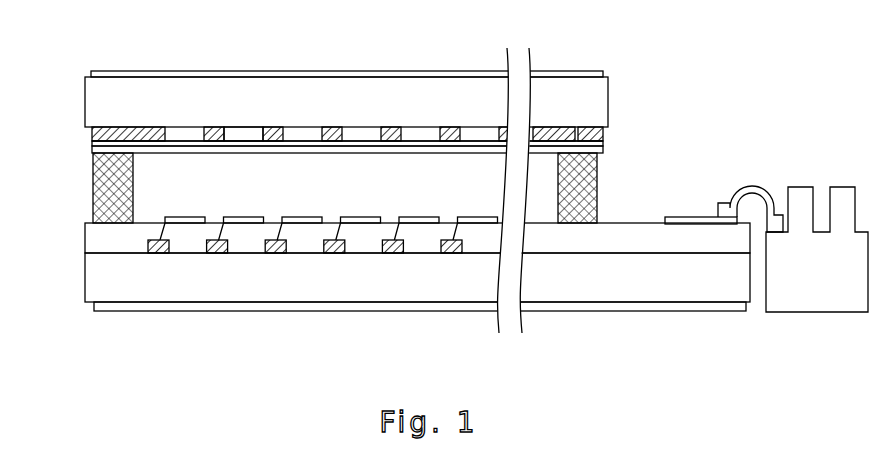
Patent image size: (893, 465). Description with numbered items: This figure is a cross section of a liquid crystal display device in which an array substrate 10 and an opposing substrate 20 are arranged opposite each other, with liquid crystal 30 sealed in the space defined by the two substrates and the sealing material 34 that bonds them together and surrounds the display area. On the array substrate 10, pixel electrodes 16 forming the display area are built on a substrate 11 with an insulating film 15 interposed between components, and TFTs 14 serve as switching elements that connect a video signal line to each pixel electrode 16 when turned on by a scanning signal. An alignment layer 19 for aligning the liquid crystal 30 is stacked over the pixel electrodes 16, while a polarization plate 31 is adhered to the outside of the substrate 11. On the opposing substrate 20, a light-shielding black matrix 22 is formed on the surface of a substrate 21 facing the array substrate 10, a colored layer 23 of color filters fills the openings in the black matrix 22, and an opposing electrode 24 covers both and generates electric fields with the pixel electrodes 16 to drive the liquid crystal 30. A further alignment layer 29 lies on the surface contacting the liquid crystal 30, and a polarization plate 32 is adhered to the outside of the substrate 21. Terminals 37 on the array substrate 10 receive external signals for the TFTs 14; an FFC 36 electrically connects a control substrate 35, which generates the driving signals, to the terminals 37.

The array substrate 10 is at (385, 292).
The substrate 11 is at (608, 288).
The TFT 14 is at (453, 255).
The insulating film 15 is at (193, 237).
The pixel electrode 16 is at (310, 220).
The alignment layer 19 is at (270, 217).
The opposing substrate 20 is at (314, 84).
The substrate 21 is at (108, 102).
The black matrix 22 is at (270, 141).
The colored layer 23 is at (245, 141).
The opposing electrode 24 is at (428, 146).
The alignment layer 29 is at (363, 150).
The liquid crystal 30 is at (372, 192).
The polarization plate 31 is at (697, 311).
The polarization plate 32 is at (168, 77).
The sealing material 34 is at (575, 160).
The control substrate 35 is at (843, 200).
The FFC 36 is at (752, 190).
The terminals 37 is at (687, 217).